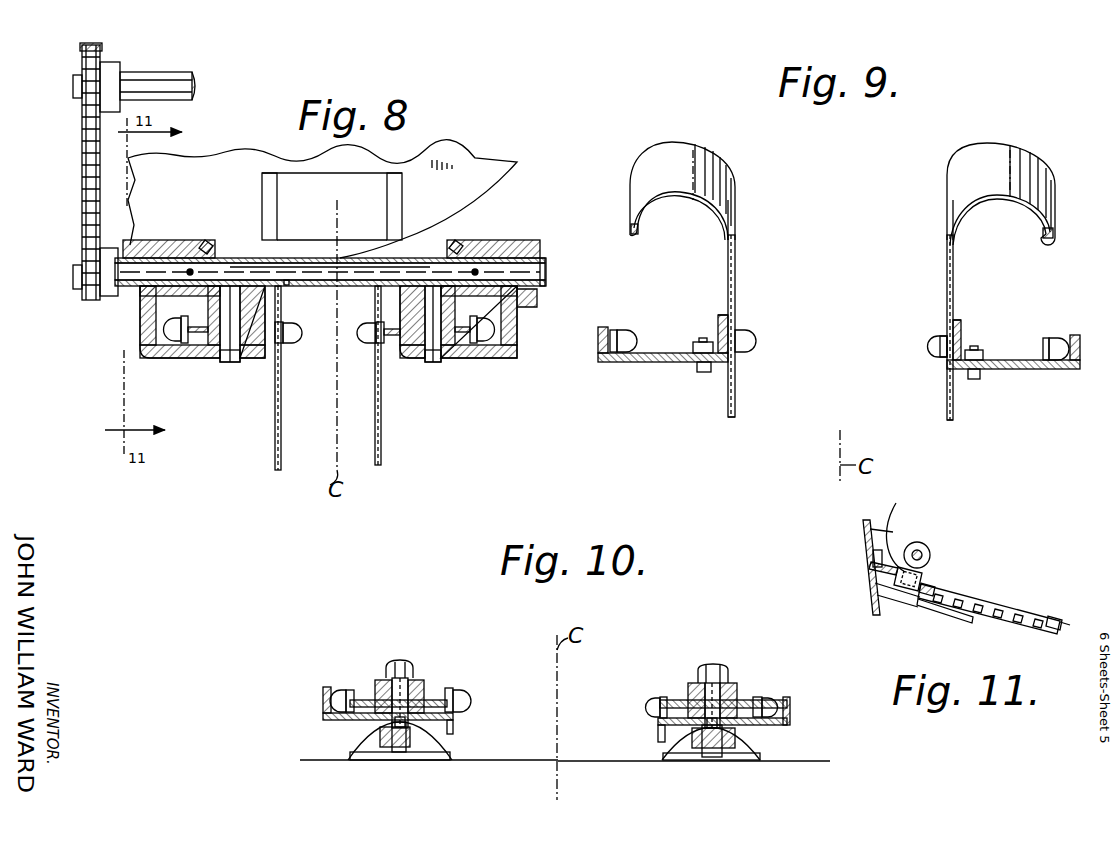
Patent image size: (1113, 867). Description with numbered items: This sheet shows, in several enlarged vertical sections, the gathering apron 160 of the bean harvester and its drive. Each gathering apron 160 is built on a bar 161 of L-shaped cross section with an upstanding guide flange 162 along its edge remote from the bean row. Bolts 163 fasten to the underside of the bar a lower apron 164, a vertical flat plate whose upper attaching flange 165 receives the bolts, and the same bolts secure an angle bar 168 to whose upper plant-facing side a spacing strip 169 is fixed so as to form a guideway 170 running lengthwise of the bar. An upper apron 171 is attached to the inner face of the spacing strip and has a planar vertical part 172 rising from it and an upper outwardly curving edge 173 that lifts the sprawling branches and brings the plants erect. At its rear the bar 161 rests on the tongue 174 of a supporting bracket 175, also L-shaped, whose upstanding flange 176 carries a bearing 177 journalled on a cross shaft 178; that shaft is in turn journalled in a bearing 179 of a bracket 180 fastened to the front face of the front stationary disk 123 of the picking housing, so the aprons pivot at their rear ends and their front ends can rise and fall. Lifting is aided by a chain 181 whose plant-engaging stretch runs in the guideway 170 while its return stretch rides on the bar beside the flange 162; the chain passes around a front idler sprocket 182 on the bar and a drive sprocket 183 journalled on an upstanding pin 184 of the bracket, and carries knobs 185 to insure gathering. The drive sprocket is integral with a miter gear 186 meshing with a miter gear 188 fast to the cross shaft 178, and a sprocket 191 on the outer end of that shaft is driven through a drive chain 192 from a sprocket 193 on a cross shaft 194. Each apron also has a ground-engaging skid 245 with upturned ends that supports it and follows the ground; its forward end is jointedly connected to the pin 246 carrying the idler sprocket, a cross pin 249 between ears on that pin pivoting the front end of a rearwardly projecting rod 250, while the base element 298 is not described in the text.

In FIG. 8, the front stationary disk 123 is at (484, 157).
In FIG. 11, the front stationary disk 123 is at (864, 540).
In FIG. 8, the gathering apron 160 is at (275, 463).
In FIG. 9, the gathering apron 160 is at (699, 142).
In FIG. 9, the bar 161 is at (648, 362).
In FIG. 10, the bar 161 is at (323, 714).
In FIG. 11, the bar 161 is at (998, 624).
In FIG. 9, the upstanding guide flange 162 is at (598, 330).
In FIG. 10, the upstanding guide flange 162 is at (323, 692).
In FIG. 9, the bolts 163 is at (694, 345).
In FIG. 9, the lower apron 164 is at (736, 415).
In FIG. 10, the lower apron 164 is at (453, 730).
In FIG. 9, the upper attaching flange 165 is at (692, 366).
In FIG. 10, the upper attaching flange 165 is at (440, 740).
In FIG. 9, the angle bar 168 is at (720, 325).
In FIG. 9, the spacing strip 169 is at (722, 318).
In FIG. 9, the guideway 170 is at (757, 342).
In FIG. 9, the upper apron 171 is at (736, 228).
In FIG. 9, the planar vertical part 172 is at (736, 268).
In FIG. 9, the upper outwardly curving edge 173 is at (676, 195).
In FIG. 11, the tongue 174 is at (963, 622).
In FIG. 8, the supporting bracket 175 is at (158, 360).
In FIG. 11, the supporting bracket 175 is at (900, 604).
In FIG. 8, the upstanding flange 176 is at (142, 333).
In FIG. 11, the upstanding flange 176 is at (897, 505).
In FIG. 8, the bearing 177 is at (546, 272).
In FIG. 8, the cross shaft 178 is at (357, 266).
In FIG. 11, the cross shaft 178 is at (925, 568).
In FIG. 8, the bearing 179 is at (325, 255).
In FIG. 8, the bracket 180 is at (332, 206).
In FIG. 11, the bracket 180 is at (878, 527).
In FIG. 8, the chain 181 is at (192, 342).
In FIG. 9, the chain 181 is at (634, 330).
In FIG. 10, the chain 181 is at (455, 688).
In FIG. 11, the chain 181 is at (1050, 618).
In FIG. 10, the idler sprocket 182 is at (447, 688).
In FIG. 8, the drive sprocket 183 is at (238, 352).
In FIG. 11, the drive sprocket 183 is at (930, 590).
In FIG. 8, the upstanding pin 184 is at (424, 300).
In FIG. 8, the knobs 185 is at (300, 321).
In FIG. 9, the knobs 185 is at (945, 340).
In FIG. 8, the miter gear 186 is at (288, 280).
In FIG. 11, the miter gear 186 is at (936, 582).
In FIG. 8, the miter gear 188 is at (210, 245).
In FIG. 11, the miter gear 188 is at (918, 541).
In FIG. 8, the sprocket 191 is at (84, 300).
In FIG. 8, the drive chain 192 is at (82, 210).
In FIG. 8, the sprocket 193 is at (88, 47).
In FIG. 8, the cross shaft 194 is at (177, 76).
In FIG. 10, the skid 245 is at (440, 762).
In FIG. 10, the pin 246 is at (400, 660).
In FIG. 10, the cross pin 249 is at (380, 737).
In FIG. 10, the rod 250 is at (401, 760).
In FIG. 10, the base plate 298 is at (378, 760).